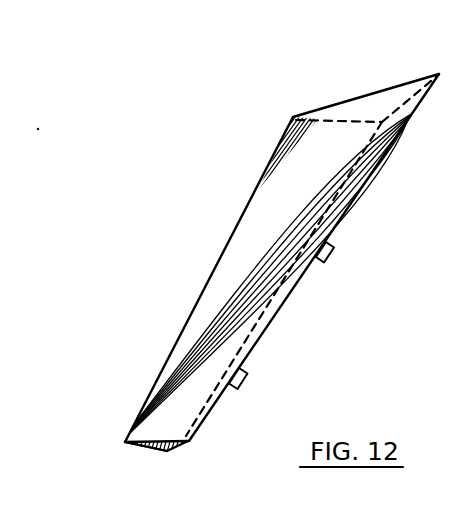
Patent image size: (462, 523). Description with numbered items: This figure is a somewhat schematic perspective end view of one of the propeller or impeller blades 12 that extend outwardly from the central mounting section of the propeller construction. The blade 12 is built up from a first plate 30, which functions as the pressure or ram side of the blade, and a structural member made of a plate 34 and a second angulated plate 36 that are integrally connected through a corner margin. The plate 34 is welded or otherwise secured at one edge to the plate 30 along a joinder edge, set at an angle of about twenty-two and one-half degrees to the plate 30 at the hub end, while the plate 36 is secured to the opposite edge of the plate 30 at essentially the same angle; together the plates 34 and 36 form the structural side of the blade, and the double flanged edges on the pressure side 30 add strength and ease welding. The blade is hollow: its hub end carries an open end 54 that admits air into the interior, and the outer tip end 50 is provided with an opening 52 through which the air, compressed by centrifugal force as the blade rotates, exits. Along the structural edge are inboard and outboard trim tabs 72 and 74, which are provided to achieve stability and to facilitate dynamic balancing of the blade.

The propeller or impeller blade 12 is at (270, 120).
The first plate 30 is at (257, 217).
The plate 34 is at (227, 283).
The second angulated plate 36 is at (362, 192).
The tip end 50 is at (158, 441).
The opening 52 is at (162, 450).
The open end 54 is at (364, 106).
The inboard trim tab 72 is at (331, 254).
The outboard trim tab 74 is at (247, 377).